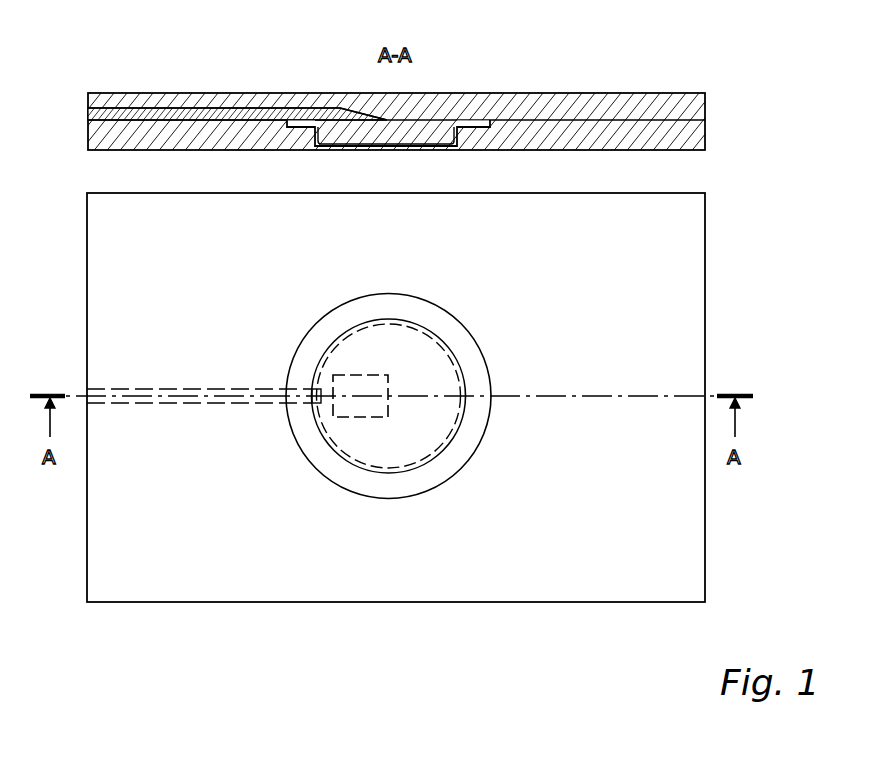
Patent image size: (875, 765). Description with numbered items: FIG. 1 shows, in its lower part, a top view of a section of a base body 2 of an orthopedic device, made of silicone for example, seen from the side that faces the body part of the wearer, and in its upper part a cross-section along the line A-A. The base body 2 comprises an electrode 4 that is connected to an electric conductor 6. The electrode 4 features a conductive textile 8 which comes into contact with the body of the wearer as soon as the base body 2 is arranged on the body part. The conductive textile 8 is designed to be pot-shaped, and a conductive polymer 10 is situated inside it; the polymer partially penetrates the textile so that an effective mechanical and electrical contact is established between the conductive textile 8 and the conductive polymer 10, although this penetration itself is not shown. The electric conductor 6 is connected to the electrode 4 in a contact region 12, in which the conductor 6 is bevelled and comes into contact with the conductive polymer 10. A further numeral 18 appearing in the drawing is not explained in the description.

The base body 2 is at (632, 106).
The electrode 4 is at (442, 106).
The electric conductor 6 is at (160, 117).
The conductive textile 8 is at (445, 148).
The conductive polymer 10 is at (338, 130).
The contact region 12 is at (347, 407).
The section indicator 18 is at (357, 93).